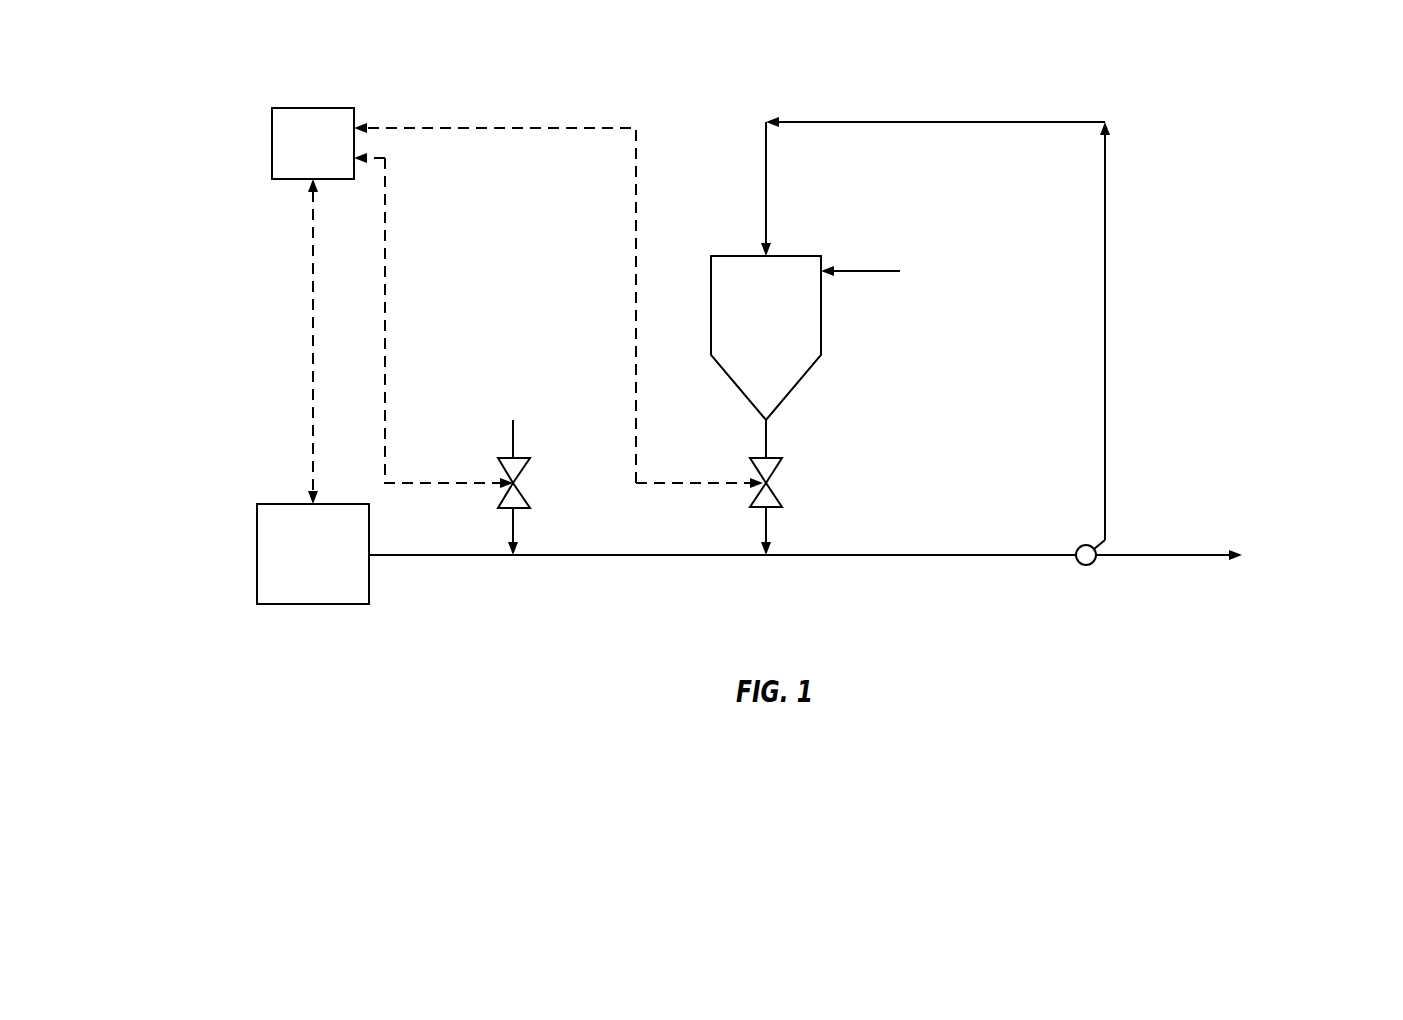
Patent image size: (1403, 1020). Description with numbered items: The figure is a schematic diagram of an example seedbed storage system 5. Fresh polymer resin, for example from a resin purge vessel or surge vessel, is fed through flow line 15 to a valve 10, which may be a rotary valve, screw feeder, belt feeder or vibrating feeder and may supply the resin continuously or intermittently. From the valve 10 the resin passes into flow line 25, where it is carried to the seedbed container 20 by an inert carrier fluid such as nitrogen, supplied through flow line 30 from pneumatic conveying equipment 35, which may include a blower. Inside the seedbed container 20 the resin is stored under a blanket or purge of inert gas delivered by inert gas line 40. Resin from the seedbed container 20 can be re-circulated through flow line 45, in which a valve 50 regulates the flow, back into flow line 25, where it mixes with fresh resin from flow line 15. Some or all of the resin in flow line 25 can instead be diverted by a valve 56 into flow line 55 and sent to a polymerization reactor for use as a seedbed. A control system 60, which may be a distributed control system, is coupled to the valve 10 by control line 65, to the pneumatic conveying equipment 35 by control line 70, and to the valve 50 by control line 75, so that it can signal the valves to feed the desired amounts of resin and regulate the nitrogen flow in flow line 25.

The seedbed storage system 5 is at (1130, 98).
The valve 10 is at (524, 493).
The flow line 15 is at (513, 440).
The seedbed container 20 is at (815, 362).
The flow line 25 is at (1106, 360).
The flow line 30 is at (448, 556).
The pneumatic conveying equipment 35 is at (282, 504).
The inert gas line 40 is at (870, 272).
The flow line 45 is at (767, 440).
The valve 50 is at (772, 492).
The flow line 55 is at (1170, 557).
The valve 56 is at (1083, 567).
The control system 60 is at (313, 108).
The control line 65 is at (385, 251).
The control line 70 is at (312, 320).
The control line 75 is at (518, 128).